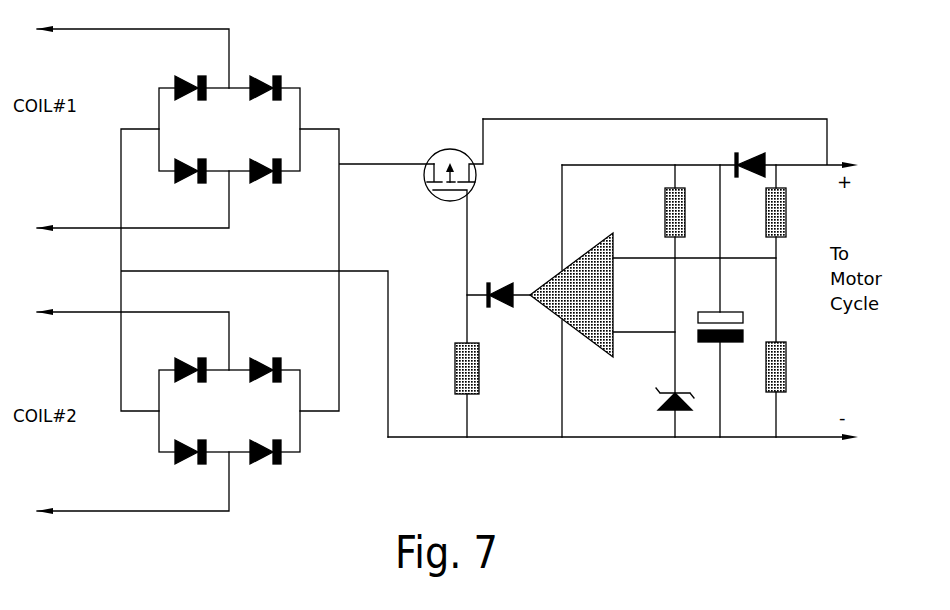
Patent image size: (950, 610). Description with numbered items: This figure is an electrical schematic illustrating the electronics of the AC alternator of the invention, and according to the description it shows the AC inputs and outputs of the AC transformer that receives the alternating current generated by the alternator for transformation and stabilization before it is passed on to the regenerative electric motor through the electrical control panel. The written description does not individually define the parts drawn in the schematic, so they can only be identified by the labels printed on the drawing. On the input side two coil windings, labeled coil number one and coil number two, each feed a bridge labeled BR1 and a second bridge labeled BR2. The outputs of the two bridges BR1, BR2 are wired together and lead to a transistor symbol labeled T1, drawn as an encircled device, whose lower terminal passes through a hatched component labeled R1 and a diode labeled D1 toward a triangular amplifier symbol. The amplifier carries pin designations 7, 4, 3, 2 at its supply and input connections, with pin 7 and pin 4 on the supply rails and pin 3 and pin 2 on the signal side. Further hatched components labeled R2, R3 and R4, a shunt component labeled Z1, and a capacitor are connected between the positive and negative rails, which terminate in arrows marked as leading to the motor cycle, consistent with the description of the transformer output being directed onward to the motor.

The bridge rectifier BR 1 BR1 is at (168, 128).
The bridge rectifier BR 2 BR2 is at (168, 411).
The transistor T1 (MOSFET) T1 is at (452, 231).
The diode D1 is at (616, 219).
The resistor R1 is at (453, 390).
The resistor R2 is at (661, 279).
The resistor R3 is at (790, 253).
The resistor R4 is at (790, 389).
The zener diode Z1 is at (662, 412).
The op amp pin 7 is at (554, 219).
The op amp pin 4 is at (554, 378).
The op amp pin 3 is at (694, 247).
The op amp pin 2 is at (644, 321).